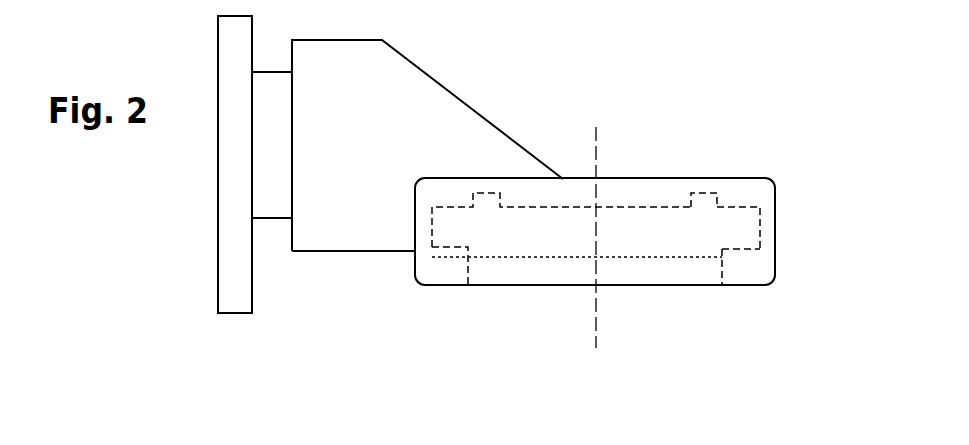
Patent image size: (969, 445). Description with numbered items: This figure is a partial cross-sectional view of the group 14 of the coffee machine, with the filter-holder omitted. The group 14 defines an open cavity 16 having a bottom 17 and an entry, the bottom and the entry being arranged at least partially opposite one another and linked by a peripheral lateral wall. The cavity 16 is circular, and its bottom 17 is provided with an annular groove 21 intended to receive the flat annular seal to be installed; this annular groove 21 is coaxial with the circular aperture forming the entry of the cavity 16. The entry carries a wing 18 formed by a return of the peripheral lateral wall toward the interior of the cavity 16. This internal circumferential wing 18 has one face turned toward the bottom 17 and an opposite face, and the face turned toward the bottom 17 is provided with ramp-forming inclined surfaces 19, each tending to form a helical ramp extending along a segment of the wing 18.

The group 14 is at (419, 110).
The cavity 16 is at (717, 227).
The bottom 17 is at (655, 207).
The wing 18 is at (743, 277).
The inclined surfaces 19 is at (740, 253).
The annular groove 21 is at (705, 190).